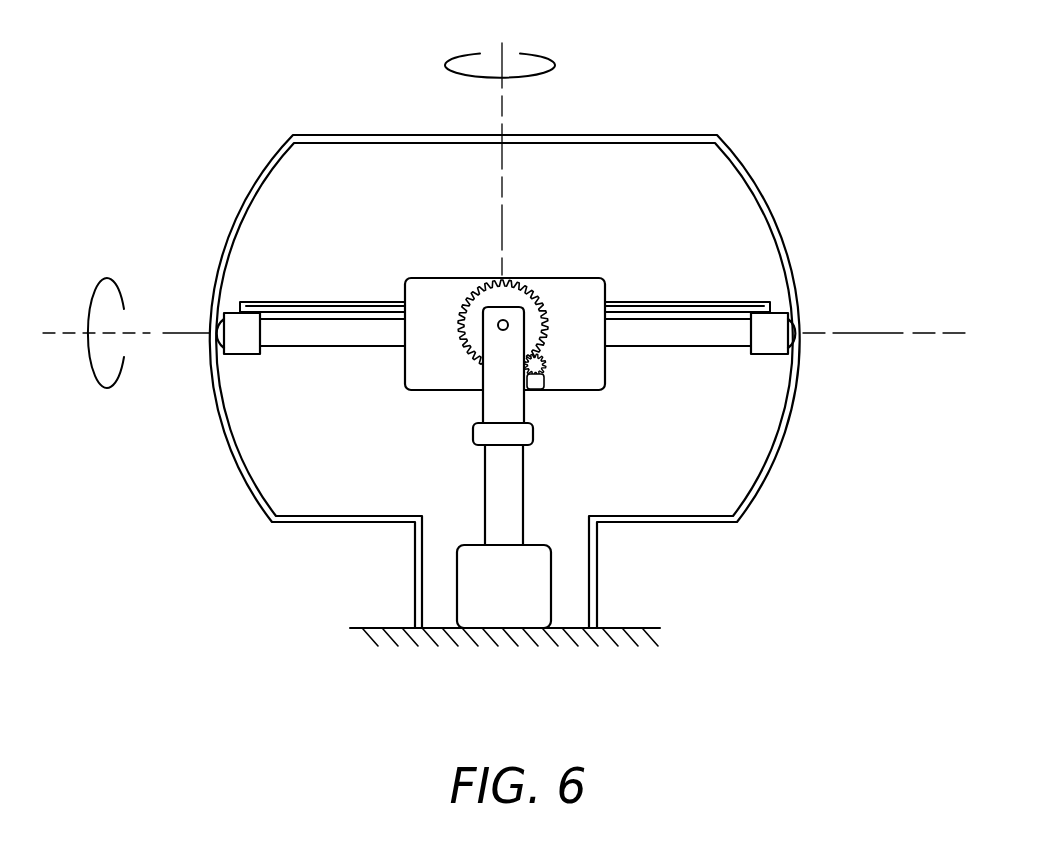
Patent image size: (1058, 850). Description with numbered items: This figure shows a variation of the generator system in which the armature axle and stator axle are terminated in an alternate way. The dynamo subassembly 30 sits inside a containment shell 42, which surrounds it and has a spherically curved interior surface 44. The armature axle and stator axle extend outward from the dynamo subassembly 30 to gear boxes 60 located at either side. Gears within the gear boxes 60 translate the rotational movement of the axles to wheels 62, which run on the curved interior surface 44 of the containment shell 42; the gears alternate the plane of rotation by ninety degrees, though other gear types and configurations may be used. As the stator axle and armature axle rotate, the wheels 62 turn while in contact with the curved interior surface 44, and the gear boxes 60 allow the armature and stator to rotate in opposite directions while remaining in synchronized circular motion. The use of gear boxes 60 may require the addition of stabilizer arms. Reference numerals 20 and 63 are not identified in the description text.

The gimbal device 20 is at (482, 323).
The dynamo subassembly 30 is at (600, 262).
The containment shell 42 is at (257, 187).
The spherically curved interior surface 44 is at (278, 158).
The gear box 60 is at (243, 343).
The wheel 62 is at (798, 333).
The support bar 63 is at (707, 300).